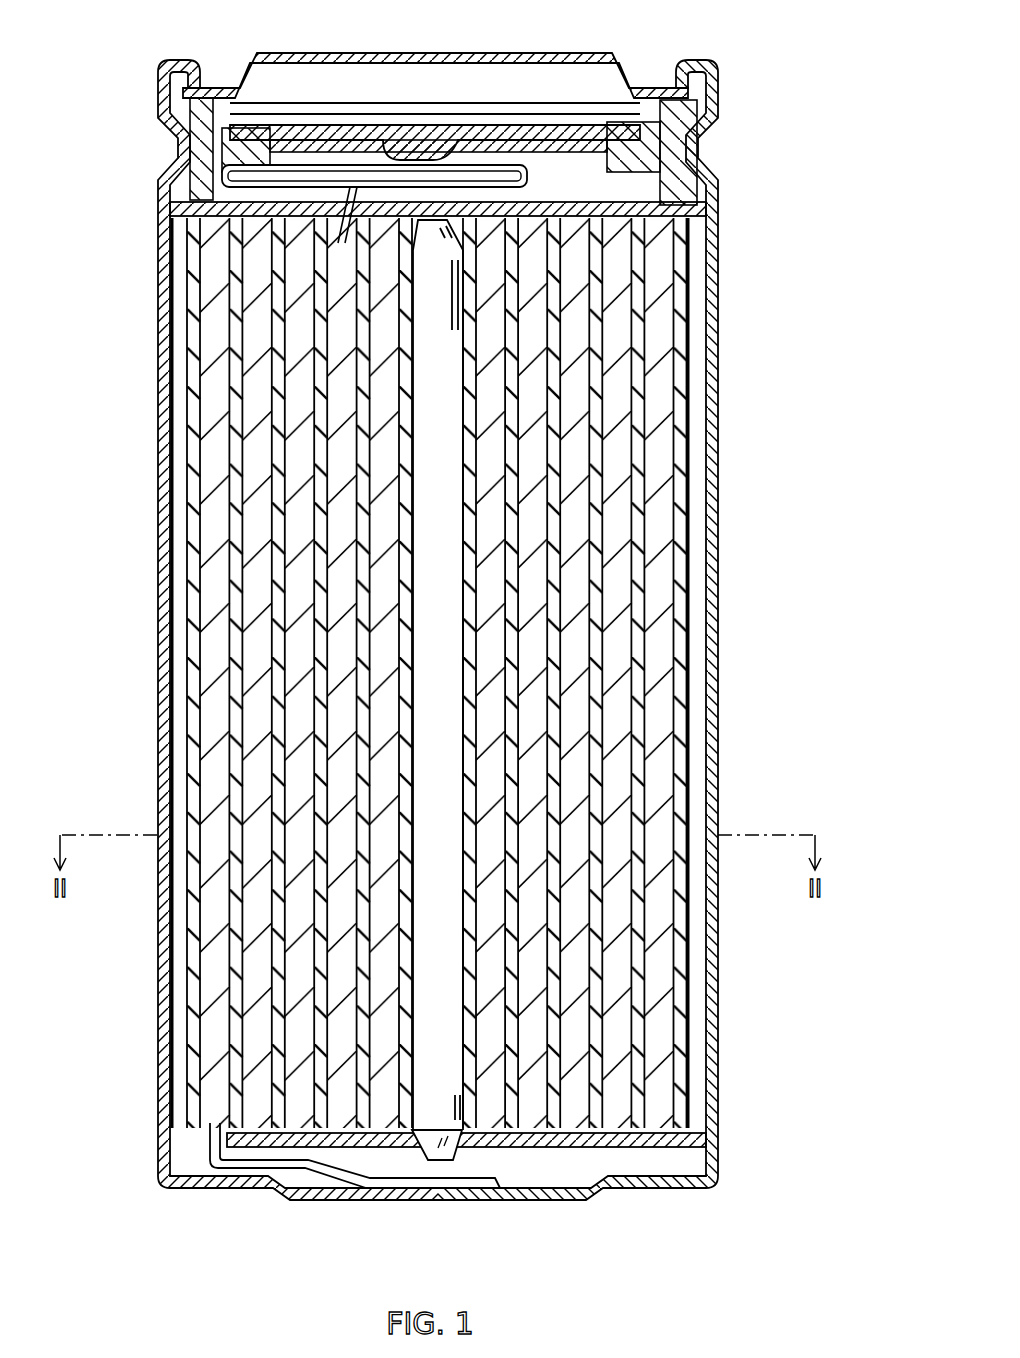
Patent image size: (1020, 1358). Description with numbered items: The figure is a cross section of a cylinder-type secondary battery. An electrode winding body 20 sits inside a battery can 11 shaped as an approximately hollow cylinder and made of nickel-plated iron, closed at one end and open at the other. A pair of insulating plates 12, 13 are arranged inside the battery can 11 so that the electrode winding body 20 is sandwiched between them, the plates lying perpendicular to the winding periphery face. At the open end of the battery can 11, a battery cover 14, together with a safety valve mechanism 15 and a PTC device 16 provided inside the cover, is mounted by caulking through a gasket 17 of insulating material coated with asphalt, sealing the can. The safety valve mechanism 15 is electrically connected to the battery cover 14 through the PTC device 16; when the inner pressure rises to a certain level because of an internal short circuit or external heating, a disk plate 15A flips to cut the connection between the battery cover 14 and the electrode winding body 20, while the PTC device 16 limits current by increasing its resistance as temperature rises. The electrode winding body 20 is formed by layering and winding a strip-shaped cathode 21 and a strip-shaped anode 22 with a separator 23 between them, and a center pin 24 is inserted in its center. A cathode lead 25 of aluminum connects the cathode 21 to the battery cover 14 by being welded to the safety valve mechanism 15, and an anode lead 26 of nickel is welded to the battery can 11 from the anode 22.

The battery can 11 is at (718, 268).
The insulating plate 12 is at (700, 211).
The insulating plate 13 is at (703, 1140).
The battery cover 14 is at (400, 52).
The safety valve mechanism 15 is at (572, 113).
The disk plate 15A is at (520, 134).
The PTC device 16 is at (703, 103).
The gasket 17 is at (703, 187).
The electrode winding body 20 is at (478, 689).
The cathode 21 is at (622, 498).
The anode 22 is at (665, 568).
The separator 23 is at (640, 642).
The center pin 24 is at (430, 695).
The cathode lead 25 is at (400, 163).
The anode lead 26 is at (330, 1178).